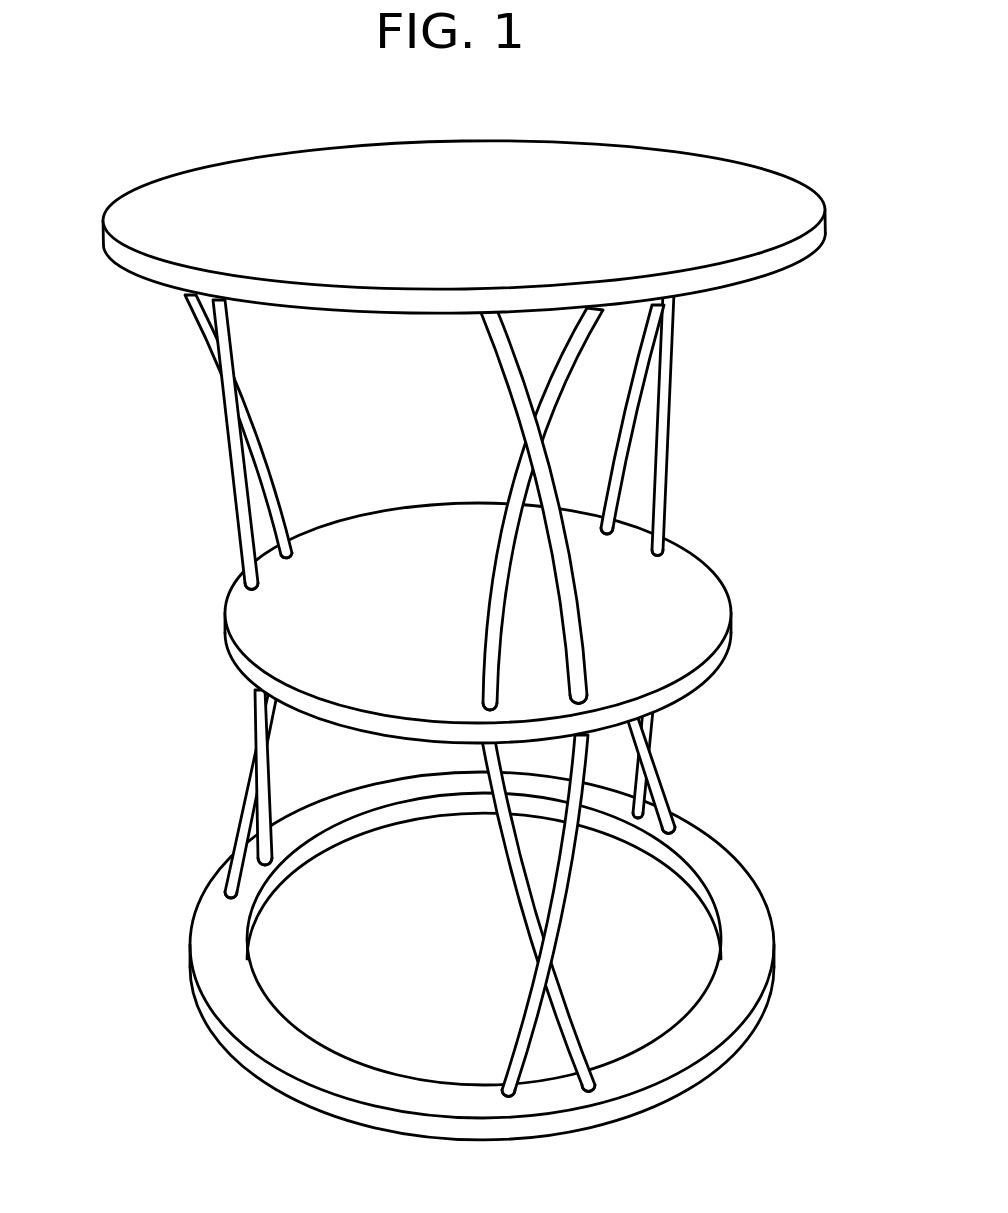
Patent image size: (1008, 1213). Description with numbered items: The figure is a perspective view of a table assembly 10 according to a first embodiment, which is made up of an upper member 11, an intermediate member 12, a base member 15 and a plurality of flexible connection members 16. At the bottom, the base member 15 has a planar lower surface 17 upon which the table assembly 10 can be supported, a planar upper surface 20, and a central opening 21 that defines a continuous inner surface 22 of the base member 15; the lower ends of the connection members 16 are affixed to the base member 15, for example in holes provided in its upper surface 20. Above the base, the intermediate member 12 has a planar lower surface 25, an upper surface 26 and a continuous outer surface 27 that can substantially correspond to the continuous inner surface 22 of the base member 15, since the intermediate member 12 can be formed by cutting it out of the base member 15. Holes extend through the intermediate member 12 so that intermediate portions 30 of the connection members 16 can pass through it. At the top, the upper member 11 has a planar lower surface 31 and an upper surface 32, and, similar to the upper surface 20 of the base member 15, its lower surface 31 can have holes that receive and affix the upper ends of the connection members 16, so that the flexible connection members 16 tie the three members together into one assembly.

The table assembly 10 is at (703, 113).
The upper member 11 is at (778, 192).
The intermediate member 12 is at (698, 595).
The base member 15 is at (764, 946).
The flexible connection members 16 is at (234, 463).
The planar lower surface 17 is at (217, 1030).
The planar upper surface 20 is at (740, 993).
The central opening 21 is at (352, 1035).
The continuous inner surface 22 is at (686, 872).
The planar lower surface 25 is at (233, 660).
The upper surface 26 is at (255, 602).
The continuous outer surface 27 is at (710, 676).
The intermediate portions 30 is at (284, 527).
The planar lower surface 31 is at (146, 282).
The upper surface 32 is at (186, 190).